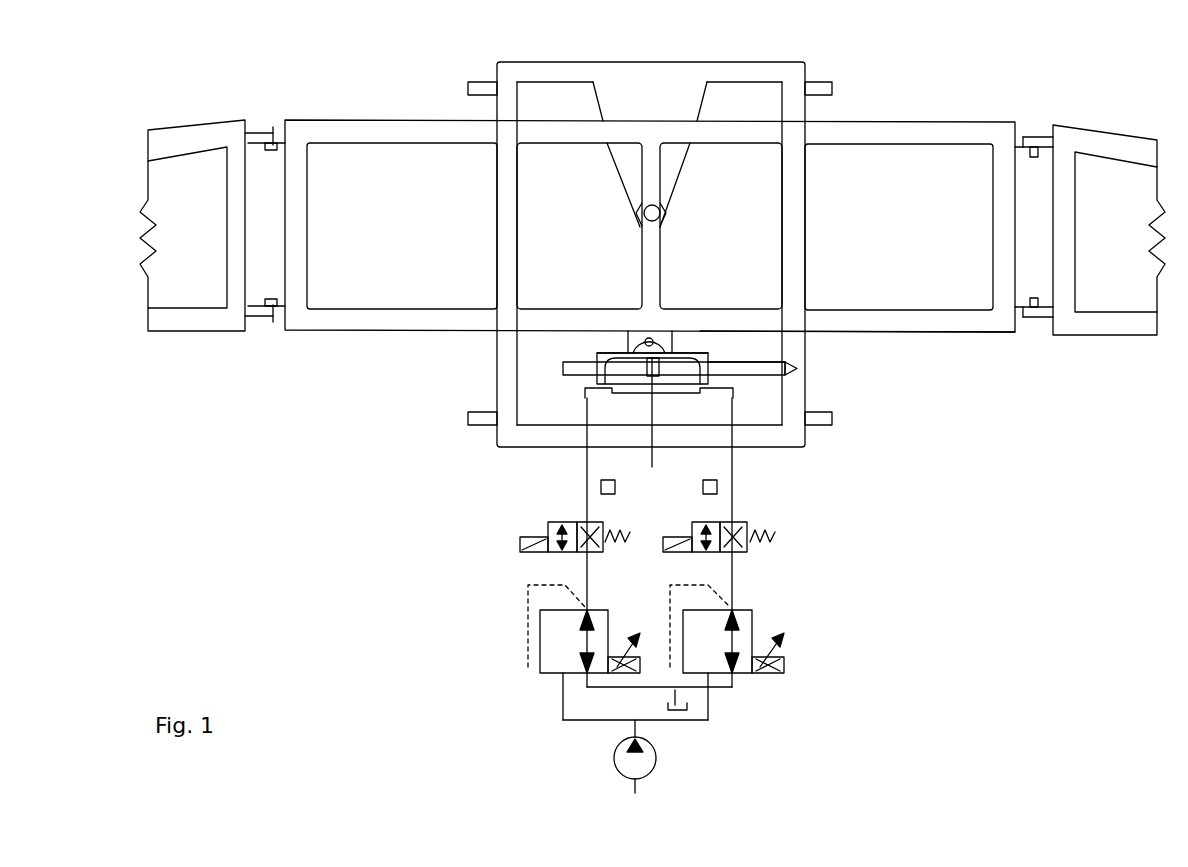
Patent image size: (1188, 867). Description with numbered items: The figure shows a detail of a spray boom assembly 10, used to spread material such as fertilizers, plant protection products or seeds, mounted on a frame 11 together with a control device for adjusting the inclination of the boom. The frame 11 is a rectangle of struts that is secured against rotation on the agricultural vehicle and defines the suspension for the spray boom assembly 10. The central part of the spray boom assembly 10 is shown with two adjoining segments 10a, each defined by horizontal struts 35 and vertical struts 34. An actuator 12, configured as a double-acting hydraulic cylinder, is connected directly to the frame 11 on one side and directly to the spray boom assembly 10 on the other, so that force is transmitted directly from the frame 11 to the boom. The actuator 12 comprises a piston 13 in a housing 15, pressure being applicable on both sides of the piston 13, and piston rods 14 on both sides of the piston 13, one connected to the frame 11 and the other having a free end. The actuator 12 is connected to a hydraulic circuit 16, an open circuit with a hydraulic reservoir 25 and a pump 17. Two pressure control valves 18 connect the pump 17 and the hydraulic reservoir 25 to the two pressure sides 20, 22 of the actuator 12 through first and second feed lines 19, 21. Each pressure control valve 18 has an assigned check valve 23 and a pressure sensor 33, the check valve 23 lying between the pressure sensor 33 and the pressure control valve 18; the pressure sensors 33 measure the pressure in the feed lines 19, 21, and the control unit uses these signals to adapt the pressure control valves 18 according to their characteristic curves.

The spray boom assembly 10 is at (898, 133).
The segments 10a is at (198, 137).
The frame 11 is at (763, 72).
The actuator 12 is at (697, 353).
The piston 13 is at (670, 420).
The piston rods 14 is at (742, 362).
The housing 15 is at (617, 352).
The hydraulic circuit 16 is at (765, 495).
The pump 17 is at (637, 760).
The pressure control valves 18 is at (548, 635).
The first feed line 19 is at (587, 458).
The pressure side 20 is at (597, 347).
The second feed line 21 is at (732, 465).
The pressure side 22 is at (708, 382).
The check valve 23 is at (520, 547).
The hydraulic reservoir 25 is at (687, 710).
The pressure sensors 33 is at (703, 488).
The vertical struts 34 is at (298, 263).
The horizontal struts 35 is at (933, 324).